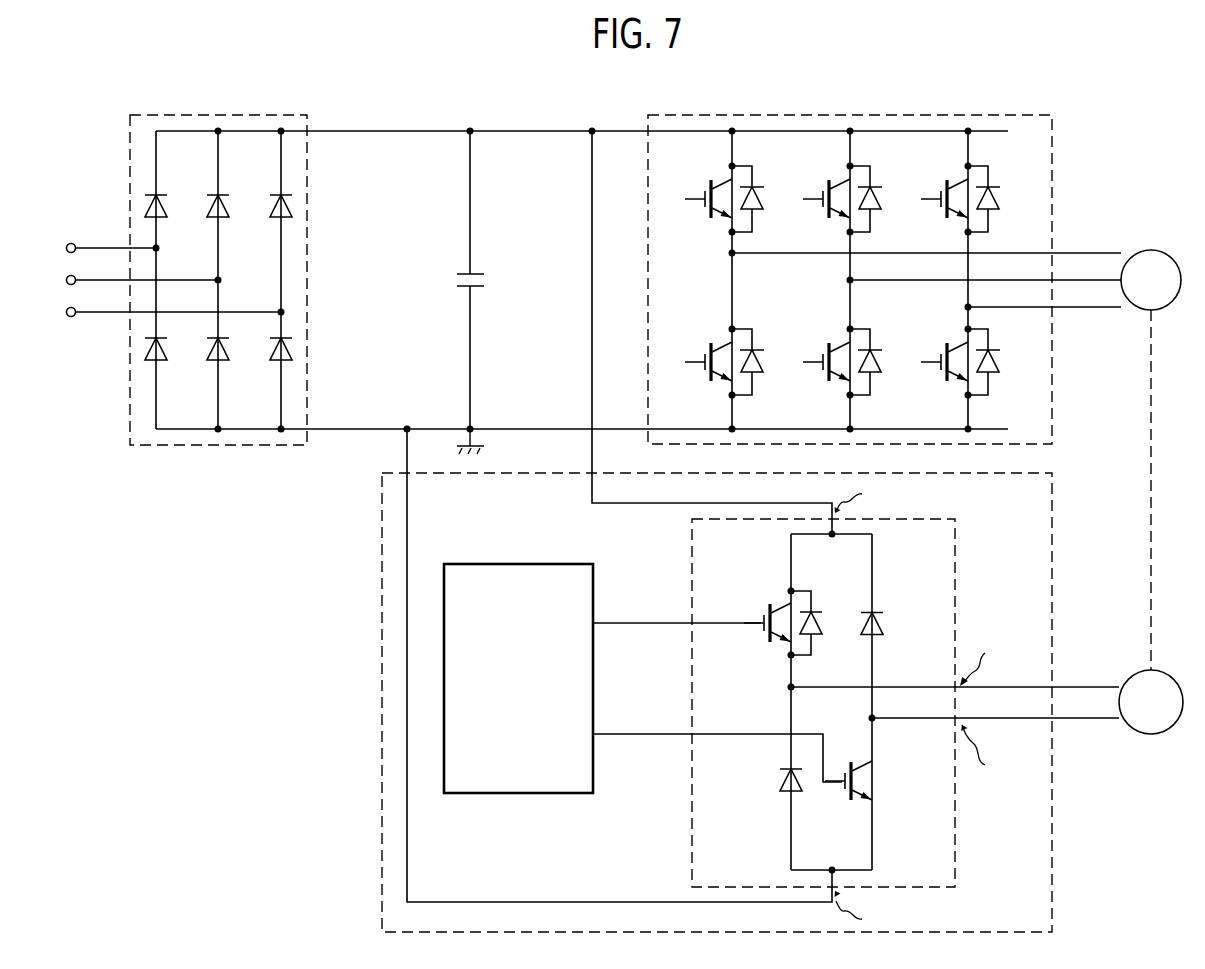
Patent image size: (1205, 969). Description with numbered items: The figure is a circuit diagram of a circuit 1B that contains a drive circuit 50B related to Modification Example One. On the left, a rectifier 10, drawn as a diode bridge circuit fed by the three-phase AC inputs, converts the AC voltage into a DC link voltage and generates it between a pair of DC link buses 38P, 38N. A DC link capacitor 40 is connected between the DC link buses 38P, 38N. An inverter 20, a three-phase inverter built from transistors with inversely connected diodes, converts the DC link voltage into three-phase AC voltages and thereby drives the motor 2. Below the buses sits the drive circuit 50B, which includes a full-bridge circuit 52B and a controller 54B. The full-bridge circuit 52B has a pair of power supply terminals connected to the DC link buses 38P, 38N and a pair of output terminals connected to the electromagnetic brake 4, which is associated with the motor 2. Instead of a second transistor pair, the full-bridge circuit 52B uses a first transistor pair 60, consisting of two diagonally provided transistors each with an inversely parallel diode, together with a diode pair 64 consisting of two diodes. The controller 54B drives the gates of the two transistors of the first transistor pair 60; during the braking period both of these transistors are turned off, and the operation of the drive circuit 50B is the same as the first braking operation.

The circuit 1B is at (1180, 95).
The rectifier 10 is at (222, 113).
The inverter 20 is at (905, 116).
The DC link bus 38P is at (356, 131).
The DC link bus 38N is at (356, 429).
The DC link capacitor 40 is at (451, 283).
The motor 2 is at (1164, 250).
The electromagnetic brake 4 is at (1163, 672).
The drive circuit 50B is at (379, 770).
The full-bridge circuit 52B is at (957, 553).
The controller 54B is at (513, 564).
The first transistor pair 60 is at (777, 598).
The diode pair 64 is at (880, 607).